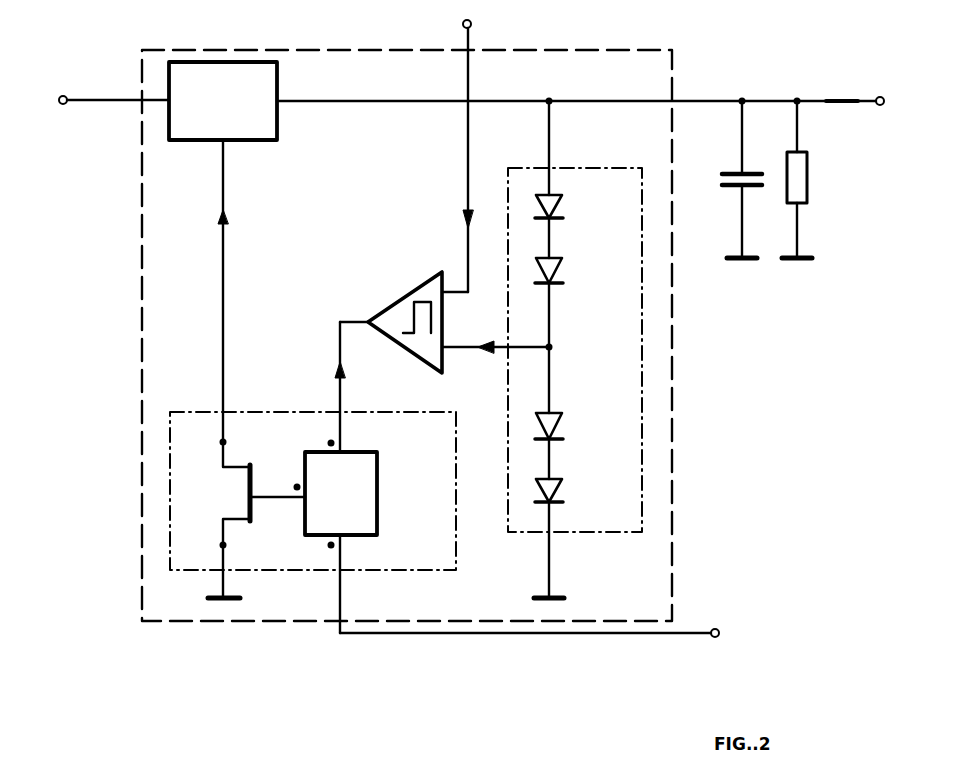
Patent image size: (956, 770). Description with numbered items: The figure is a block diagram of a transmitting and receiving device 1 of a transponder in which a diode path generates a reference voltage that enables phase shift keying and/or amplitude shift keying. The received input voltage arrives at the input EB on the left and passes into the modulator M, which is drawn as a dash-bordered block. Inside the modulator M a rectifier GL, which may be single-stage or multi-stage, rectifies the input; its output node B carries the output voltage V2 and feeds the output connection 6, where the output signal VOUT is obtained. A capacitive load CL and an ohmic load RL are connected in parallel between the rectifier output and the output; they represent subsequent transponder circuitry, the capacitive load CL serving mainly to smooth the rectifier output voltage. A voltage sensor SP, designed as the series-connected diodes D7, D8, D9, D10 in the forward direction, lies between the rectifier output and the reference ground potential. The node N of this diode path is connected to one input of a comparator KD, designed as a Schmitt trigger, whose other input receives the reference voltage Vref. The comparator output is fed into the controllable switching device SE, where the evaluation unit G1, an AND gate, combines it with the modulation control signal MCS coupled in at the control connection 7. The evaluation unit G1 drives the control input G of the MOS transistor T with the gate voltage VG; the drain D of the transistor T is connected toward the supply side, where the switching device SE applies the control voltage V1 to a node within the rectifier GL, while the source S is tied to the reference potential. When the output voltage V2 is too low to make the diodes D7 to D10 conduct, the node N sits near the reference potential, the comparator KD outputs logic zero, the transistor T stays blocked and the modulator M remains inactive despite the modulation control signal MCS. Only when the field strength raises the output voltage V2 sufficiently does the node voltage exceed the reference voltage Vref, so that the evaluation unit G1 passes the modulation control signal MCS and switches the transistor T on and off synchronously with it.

The input terminal EB is at (62, 100).
The rectifier GL is at (268, 144).
The control voltage V1 is at (226, 220).
The reference voltage Vref is at (474, 23).
The node B is at (555, 95).
The output voltage V2 is at (545, 110).
The diode D7 is at (565, 208).
The diode D8 is at (565, 264).
The diode D9 is at (565, 420).
The diode D10 is at (565, 486).
The voltage sensor SP is at (607, 533).
The node N is at (556, 348).
The comparator KD is at (406, 294).
The evaluation unit G1 is at (379, 505).
The modulation control signal MCS is at (718, 626).
The control connection 7 is at (716, 640).
The controllable switching device SE is at (396, 572).
The MOS transistor T is at (238, 497).
The drain D is at (228, 441).
The control input G is at (276, 486).
The gate voltage VG is at (278, 500).
The source S is at (229, 546).
The transmitting and receiving device 1 is at (117, 432).
The modulator M is at (652, 50).
The output connection 6 is at (882, 90).
The output signal VOUT is at (832, 108).
The capacitive load CL is at (716, 180).
The ohmic load RL is at (810, 182).